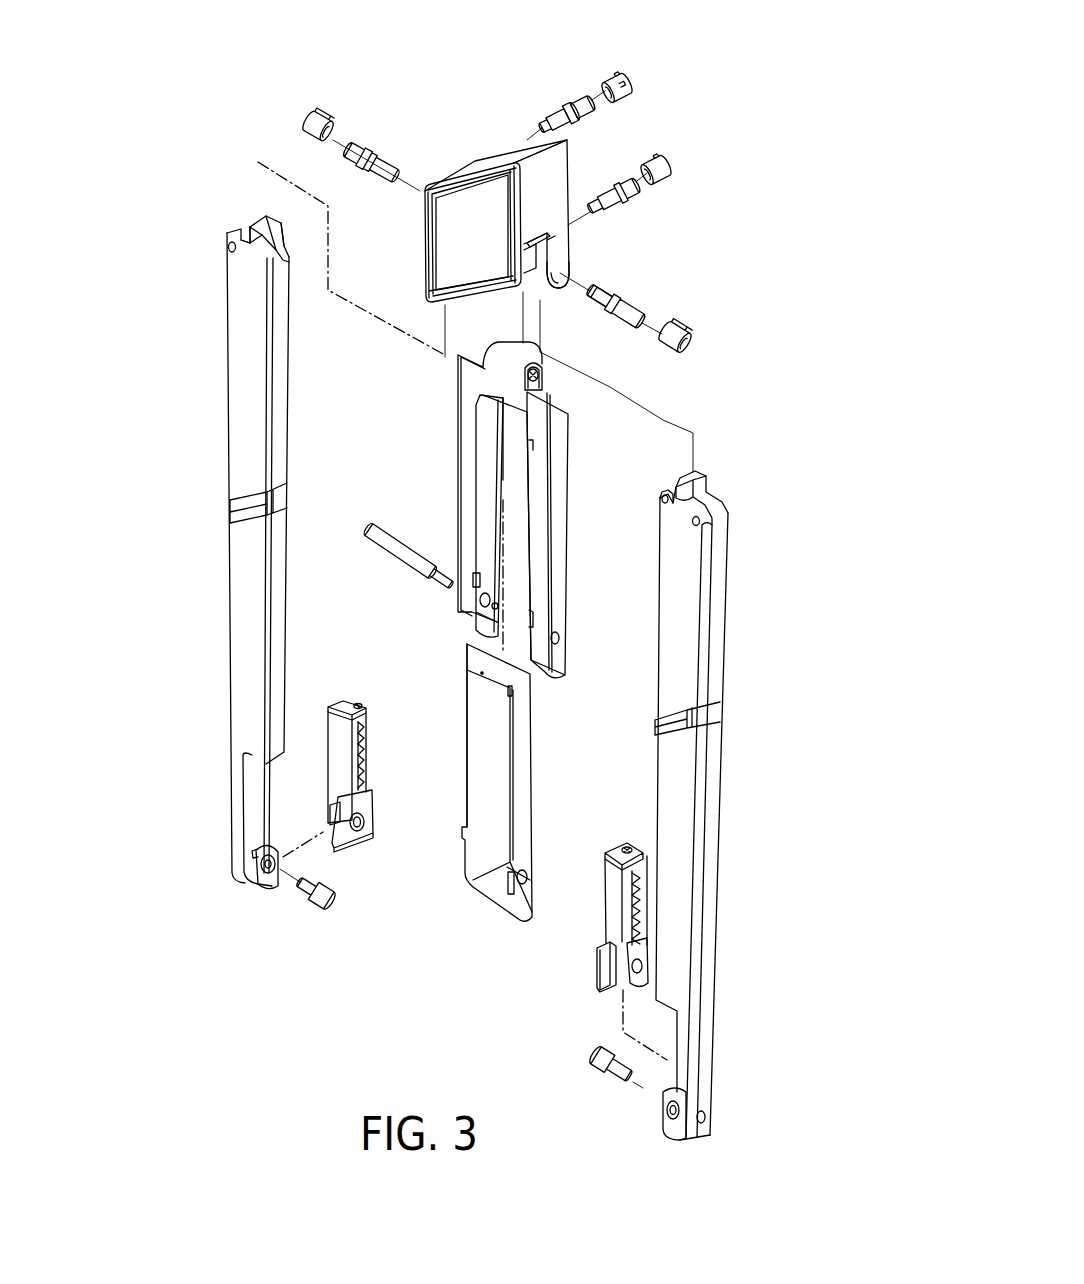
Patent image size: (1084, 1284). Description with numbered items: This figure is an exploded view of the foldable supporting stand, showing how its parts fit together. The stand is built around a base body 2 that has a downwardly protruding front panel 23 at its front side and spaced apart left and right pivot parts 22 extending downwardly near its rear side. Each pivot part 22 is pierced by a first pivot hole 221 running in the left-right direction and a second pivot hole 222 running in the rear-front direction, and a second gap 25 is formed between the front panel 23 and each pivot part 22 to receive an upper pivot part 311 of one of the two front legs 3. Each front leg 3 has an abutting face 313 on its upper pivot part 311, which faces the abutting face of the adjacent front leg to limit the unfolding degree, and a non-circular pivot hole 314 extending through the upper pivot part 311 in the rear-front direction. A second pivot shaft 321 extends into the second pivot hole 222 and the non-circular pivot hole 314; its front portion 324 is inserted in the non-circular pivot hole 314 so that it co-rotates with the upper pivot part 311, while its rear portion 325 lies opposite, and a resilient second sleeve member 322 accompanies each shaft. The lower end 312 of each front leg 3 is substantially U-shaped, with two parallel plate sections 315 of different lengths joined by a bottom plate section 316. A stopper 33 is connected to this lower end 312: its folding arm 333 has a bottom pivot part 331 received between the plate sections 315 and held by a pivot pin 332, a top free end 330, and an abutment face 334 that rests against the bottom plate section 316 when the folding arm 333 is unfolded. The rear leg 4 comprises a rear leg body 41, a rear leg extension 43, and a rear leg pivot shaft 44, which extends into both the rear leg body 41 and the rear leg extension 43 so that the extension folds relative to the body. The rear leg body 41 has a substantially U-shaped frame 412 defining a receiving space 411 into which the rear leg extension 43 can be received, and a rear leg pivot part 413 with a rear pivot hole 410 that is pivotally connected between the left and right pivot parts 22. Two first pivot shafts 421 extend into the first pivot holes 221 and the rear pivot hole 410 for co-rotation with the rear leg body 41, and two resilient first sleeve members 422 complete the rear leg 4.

The base body 2 is at (478, 140).
The left and right pivot parts 22 is at (561, 245).
The first pivot hole 221 is at (563, 268).
The second pivot hole 222 is at (545, 279).
The front panel 23 is at (463, 233).
The second gap 25 is at (531, 268).
The front leg 3 is at (214, 559).
The upper pivot part 311 is at (256, 250).
The lower end 312 is at (216, 795).
The abutting face 313 is at (300, 228).
The non-circular pivot hole 314 is at (228, 246).
The parallel plate sections 315 is at (666, 1107).
The bottom plate section 316 is at (672, 1132).
The second pivot shaft 321 is at (588, 74).
The resilient second sleeve member 322 is at (650, 78).
The front portion 324 is at (548, 127).
The rear portion 325 is at (578, 100).
The stopper 33 is at (375, 730).
The top free end 330 is at (613, 852).
The bottom pivot part 331 is at (585, 953).
The pivot pin 332 is at (318, 893).
The folding arm 333 is at (614, 903).
The abutment face 334 is at (620, 968).
The rear leg 4 is at (400, 514).
The rear leg body 41 is at (585, 592).
The rear pivot hole 410 is at (541, 375).
The receiving space 411 is at (518, 490).
The U-shaped frame 412 is at (477, 470).
The rear leg pivot part 413 is at (502, 363).
The first pivot shaft 421 is at (379, 138).
The resilient first sleeve member 422 is at (323, 96).
The rear leg extension 43 is at (523, 792).
The rear leg pivot shaft 44 is at (396, 555).